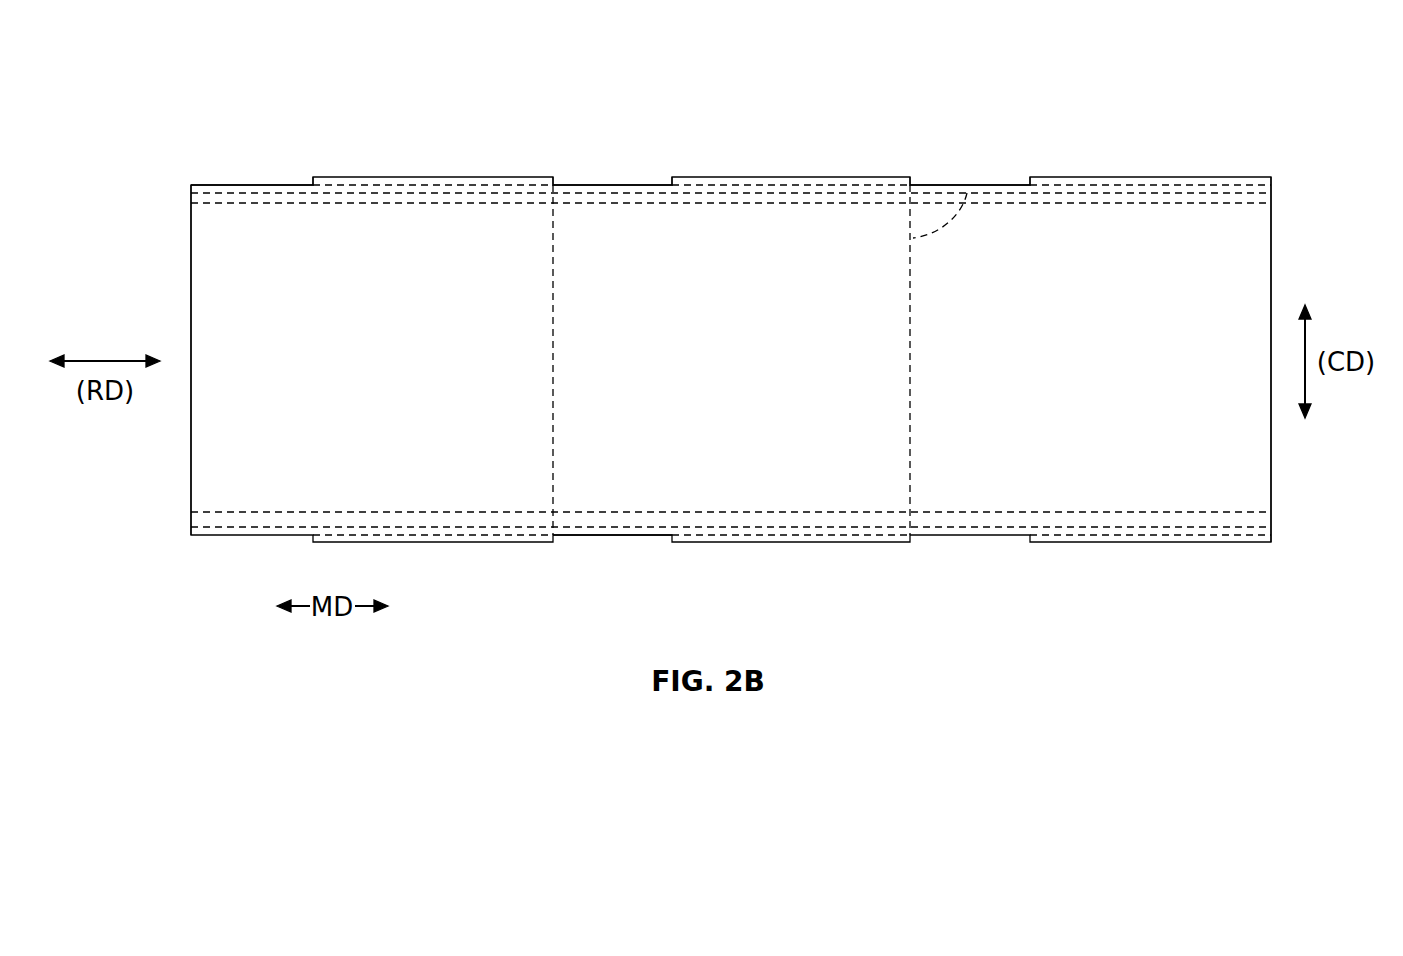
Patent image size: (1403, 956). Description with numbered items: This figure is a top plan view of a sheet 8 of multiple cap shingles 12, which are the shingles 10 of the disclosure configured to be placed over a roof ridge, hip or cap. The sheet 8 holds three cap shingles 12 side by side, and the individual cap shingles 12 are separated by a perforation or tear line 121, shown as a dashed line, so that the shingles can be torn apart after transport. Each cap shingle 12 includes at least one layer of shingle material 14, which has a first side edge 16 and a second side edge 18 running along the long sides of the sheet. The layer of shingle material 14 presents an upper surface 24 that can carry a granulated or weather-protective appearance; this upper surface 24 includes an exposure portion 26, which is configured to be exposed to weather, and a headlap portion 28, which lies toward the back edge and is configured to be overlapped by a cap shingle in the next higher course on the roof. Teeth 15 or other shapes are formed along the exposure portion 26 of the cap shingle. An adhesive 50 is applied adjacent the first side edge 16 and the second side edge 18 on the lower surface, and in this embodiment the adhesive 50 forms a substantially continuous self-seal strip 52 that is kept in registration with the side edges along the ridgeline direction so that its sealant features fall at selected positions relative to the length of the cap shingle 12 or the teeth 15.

The sheet 8 is at (801, 155).
The shingles 10 is at (448, 130).
The cap shingle 12 is at (487, 212).
The layer of shingle material 14 is at (610, 547).
The teeth 15 is at (1253, 185).
The first side edge 16 is at (315, 177).
The second side edge 18 is at (460, 545).
The upper surface 24 is at (386, 371).
The exposure portion 26 is at (459, 440).
The headlap portion 28 is at (277, 440).
The adhesive 50 is at (283, 183).
The self-seal strip 52 is at (880, 193).
The perforation or tear line 121 is at (971, 178).